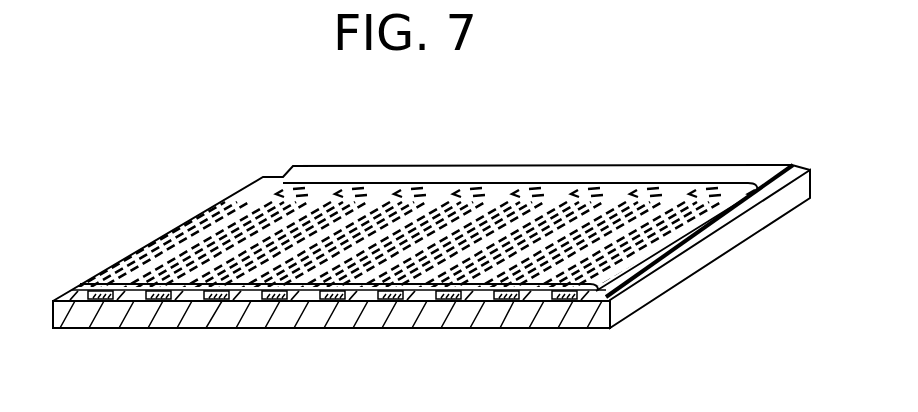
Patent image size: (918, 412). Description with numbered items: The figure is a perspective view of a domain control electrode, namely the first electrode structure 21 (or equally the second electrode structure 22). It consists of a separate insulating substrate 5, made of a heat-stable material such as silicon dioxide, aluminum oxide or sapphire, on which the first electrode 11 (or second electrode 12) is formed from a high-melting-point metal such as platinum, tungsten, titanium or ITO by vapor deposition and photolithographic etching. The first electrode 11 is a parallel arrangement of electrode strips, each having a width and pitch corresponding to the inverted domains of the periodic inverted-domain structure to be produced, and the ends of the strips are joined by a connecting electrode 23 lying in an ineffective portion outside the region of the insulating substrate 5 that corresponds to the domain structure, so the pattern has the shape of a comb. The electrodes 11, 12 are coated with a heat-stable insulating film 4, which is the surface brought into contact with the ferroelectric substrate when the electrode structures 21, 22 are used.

The insulating film 4 is at (248, 300).
The insulating substrate 5 is at (736, 240).
The first electrode 11 is at (332, 340).
The second electrode 12 is at (507, 300).
The first electrode structure 21 is at (431, 205).
The second electrode structure 22 is at (362, 139).
The connecting electrode 23 is at (623, 177).